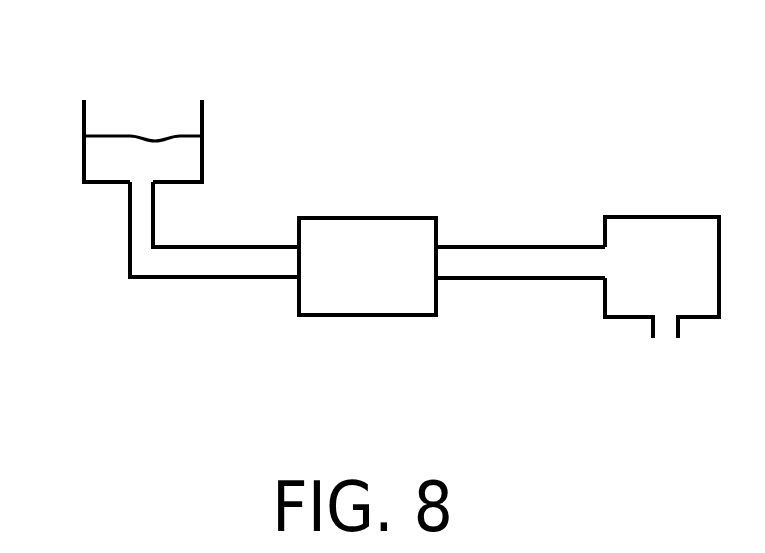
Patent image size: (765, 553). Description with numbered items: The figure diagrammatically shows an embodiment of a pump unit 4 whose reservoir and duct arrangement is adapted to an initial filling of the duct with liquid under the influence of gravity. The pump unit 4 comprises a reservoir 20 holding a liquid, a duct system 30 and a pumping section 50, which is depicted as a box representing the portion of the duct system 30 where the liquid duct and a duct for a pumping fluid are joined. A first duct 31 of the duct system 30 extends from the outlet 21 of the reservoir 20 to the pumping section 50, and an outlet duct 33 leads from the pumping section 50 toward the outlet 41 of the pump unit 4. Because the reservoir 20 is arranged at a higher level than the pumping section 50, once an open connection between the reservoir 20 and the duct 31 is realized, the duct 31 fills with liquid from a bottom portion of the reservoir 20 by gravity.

The pump unit 4 is at (583, 146).
The reservoir 20 is at (127, 115).
The outlet of the reservoir 21 is at (141, 178).
The duct system 30 is at (252, 161).
The first duct 31 is at (137, 240).
The outlet duct 33 is at (516, 258).
The outlet of the pump unit 41 is at (667, 328).
The pumping section 50 is at (368, 233).